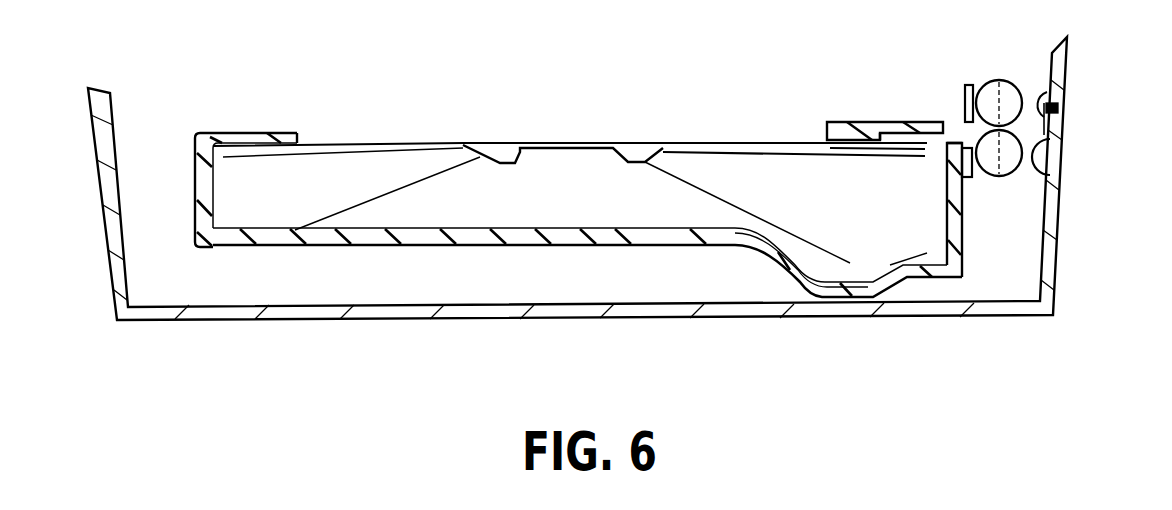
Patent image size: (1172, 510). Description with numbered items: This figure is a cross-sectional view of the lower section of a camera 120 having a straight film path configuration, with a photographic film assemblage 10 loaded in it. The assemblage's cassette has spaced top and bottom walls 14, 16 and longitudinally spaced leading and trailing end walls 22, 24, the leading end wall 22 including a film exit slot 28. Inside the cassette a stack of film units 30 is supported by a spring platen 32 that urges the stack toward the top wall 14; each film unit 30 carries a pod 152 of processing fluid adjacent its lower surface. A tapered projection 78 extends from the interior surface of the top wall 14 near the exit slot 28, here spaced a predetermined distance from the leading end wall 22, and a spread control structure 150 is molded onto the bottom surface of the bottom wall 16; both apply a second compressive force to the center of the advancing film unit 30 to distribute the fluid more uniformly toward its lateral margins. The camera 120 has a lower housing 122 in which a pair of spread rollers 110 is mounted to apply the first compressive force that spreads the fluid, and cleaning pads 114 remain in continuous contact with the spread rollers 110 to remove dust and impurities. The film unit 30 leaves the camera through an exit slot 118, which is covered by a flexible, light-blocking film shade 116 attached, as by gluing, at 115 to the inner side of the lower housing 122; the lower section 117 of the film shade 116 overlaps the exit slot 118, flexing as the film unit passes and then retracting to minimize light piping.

The photographic film assemblage 10 is at (584, 210).
The top wall 14 is at (281, 132).
The bottom wall 16 is at (560, 228).
The leading end wall 22 is at (963, 256).
The trailing end wall 24 is at (195, 173).
The film exit slot 28 is at (951, 120).
The film unit 30 is at (373, 147).
The spring platen 32 is at (457, 170).
The projection 78 is at (848, 122).
The spread rollers 110 is at (1012, 131).
The cleaning pads 114 is at (970, 83).
The attachment point 115 is at (1063, 100).
The film shade 116 is at (1063, 72).
The lower section of film shade 117 is at (1055, 177).
The exit slot 118 is at (1058, 121).
The camera 120 is at (551, 218).
The lower housing 122 is at (108, 245).
The spread control structure 150 is at (857, 288).
The pod 152 is at (876, 160).